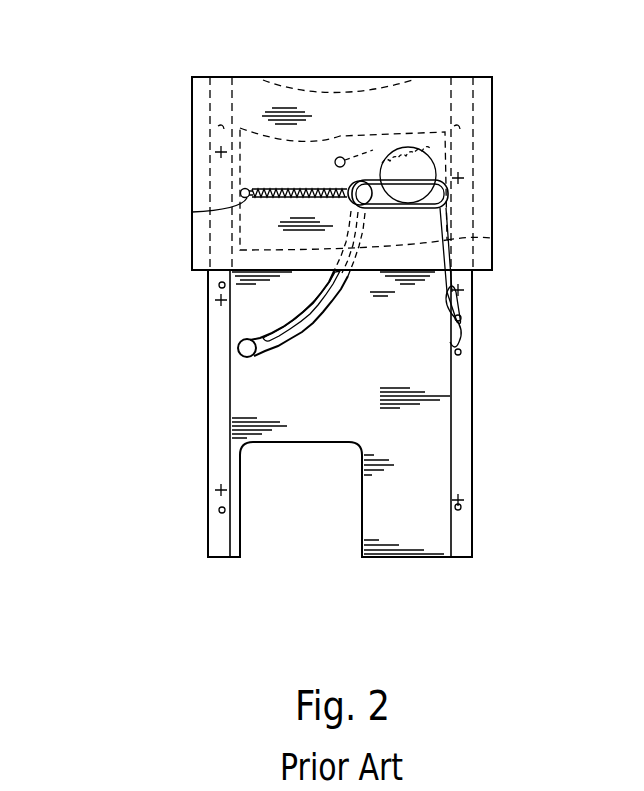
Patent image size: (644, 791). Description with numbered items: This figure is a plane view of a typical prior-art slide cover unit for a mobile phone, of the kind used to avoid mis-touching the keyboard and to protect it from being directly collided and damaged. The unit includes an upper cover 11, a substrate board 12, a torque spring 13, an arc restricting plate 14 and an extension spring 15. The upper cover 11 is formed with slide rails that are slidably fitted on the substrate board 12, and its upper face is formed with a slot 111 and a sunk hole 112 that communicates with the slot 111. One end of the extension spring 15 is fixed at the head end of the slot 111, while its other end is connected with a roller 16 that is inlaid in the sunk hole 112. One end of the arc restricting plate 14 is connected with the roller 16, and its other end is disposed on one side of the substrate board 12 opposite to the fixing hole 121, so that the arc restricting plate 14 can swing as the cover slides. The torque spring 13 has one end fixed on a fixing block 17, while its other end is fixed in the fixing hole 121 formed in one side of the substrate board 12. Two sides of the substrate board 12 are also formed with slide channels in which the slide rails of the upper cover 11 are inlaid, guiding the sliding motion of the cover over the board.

The upper cover 11 is at (492, 77).
The slot 111 is at (278, 186).
The sunk hole 112 is at (448, 190).
The substrate board 12 is at (473, 418).
The fixing hole 121 is at (460, 318).
The torque spring 13 is at (492, 238).
The arc restricting plate 14 is at (263, 333).
The extension spring 15 is at (192, 212).
The roller 16 is at (373, 145).
The fixing block 17 is at (338, 156).